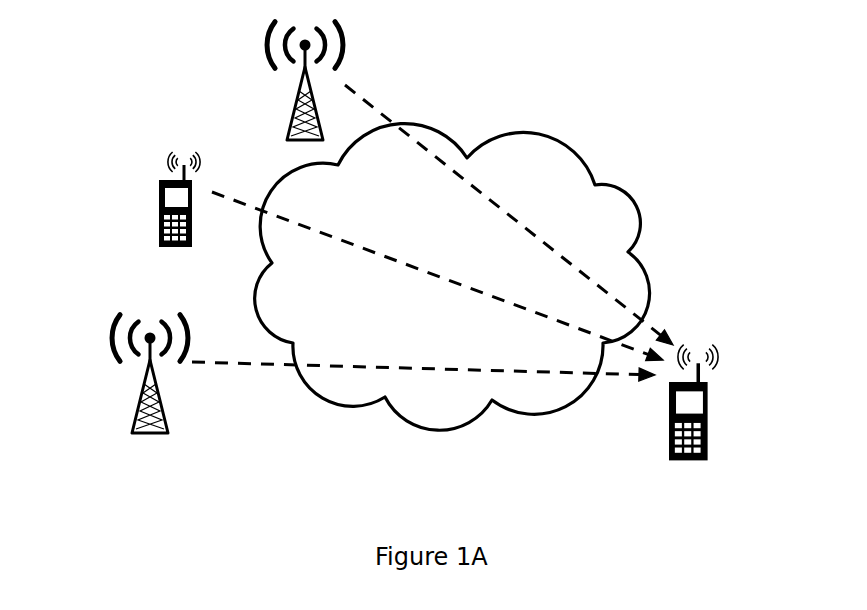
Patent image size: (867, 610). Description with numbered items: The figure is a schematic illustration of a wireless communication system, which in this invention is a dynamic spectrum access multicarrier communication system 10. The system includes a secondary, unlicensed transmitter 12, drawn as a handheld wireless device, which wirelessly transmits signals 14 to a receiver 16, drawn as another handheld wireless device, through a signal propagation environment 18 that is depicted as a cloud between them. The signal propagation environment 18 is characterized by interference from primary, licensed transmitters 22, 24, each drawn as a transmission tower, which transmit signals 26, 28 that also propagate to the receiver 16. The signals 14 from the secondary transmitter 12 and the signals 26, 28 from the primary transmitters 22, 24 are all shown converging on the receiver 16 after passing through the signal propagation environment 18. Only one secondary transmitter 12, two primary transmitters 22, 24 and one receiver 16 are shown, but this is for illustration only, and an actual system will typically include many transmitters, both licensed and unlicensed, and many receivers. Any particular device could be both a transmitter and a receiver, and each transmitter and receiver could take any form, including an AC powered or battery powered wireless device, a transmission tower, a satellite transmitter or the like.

The dynamic spectrum access multicarrier communication system 10 is at (613, 95).
The secondary unlicensed transmitter 12 is at (148, 193).
The signals 14 is at (437, 276).
The receiver 16 is at (680, 473).
The signal propagation environment 18 is at (637, 212).
The primary licensed transmitter 22 is at (138, 395).
The primary licensed transmitter 24 is at (275, 92).
The signals 26 is at (423, 363).
The signals 28 is at (509, 215).